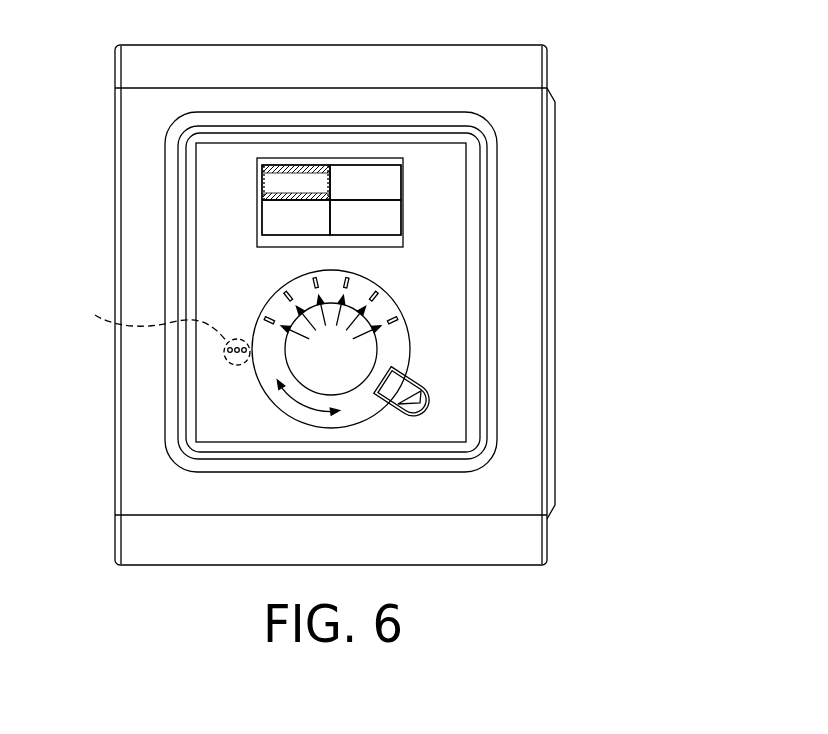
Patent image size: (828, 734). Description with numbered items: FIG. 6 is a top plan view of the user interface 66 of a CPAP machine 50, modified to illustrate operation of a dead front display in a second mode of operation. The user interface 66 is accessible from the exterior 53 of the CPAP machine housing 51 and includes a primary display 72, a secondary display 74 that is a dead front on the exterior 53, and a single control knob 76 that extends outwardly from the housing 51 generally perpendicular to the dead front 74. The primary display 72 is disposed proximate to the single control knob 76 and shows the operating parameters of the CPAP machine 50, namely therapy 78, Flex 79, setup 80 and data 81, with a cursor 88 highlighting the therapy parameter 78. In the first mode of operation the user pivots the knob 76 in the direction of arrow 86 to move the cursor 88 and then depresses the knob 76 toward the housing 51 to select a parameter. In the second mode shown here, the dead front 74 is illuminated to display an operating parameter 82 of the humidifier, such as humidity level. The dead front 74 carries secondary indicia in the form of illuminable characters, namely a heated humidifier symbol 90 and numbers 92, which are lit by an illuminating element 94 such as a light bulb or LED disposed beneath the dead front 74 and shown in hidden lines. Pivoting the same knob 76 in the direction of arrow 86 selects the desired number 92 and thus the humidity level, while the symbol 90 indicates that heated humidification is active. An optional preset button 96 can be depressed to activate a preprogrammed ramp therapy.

The CPAP machine 50 is at (614, 97).
The CPAP machine housing 51 is at (134, 148).
The exterior 53 is at (134, 230).
The user interface 66 is at (512, 195).
The operating parameter 82 is at (449, 293).
The secondary display 74 is at (213, 420).
The primary display 72 is at (404, 198).
The therapy 78 is at (258, 177).
The cursor 88 is at (258, 197).
The Flex 79 is at (398, 177).
The data 81 is at (258, 234).
The setup 80 is at (400, 228).
The single control knob 76 is at (305, 366).
The numbers 92 is at (331, 327).
The arrow 86 is at (302, 406).
The heated humidifier symbol 90 is at (213, 350).
The illuminating element 94 is at (145, 324).
The preset button 96 is at (408, 383).